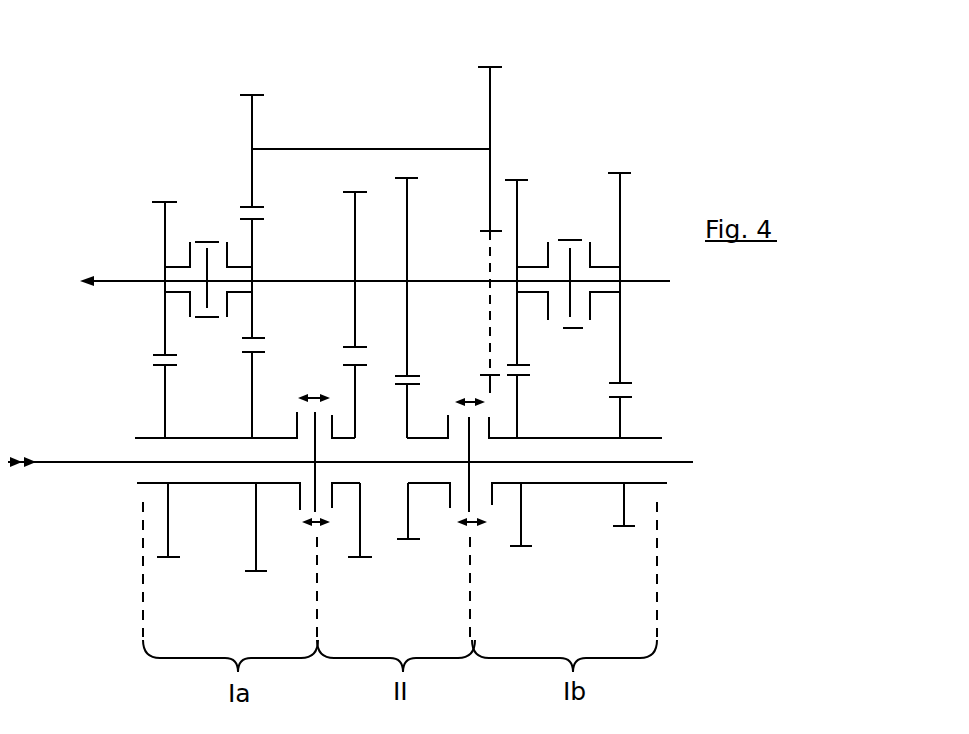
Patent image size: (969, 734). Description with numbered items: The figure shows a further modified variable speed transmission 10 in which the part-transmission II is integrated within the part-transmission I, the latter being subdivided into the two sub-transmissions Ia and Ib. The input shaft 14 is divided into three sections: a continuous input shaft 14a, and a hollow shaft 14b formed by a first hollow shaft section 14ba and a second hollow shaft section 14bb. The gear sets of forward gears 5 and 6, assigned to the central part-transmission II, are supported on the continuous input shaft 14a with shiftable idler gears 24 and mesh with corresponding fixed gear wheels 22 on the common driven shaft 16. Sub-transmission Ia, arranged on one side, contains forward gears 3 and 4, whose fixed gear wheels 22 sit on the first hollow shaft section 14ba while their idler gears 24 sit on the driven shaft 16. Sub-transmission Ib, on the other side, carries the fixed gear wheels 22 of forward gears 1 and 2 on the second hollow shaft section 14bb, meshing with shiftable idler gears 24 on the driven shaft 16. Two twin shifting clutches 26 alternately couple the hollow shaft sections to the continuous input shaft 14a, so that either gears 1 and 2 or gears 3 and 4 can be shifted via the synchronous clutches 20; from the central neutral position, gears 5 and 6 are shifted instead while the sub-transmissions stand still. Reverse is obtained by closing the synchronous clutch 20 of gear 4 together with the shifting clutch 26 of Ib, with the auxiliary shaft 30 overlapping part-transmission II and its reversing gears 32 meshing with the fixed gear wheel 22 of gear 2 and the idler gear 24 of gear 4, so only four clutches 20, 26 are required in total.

The variable speed transmission 10 is at (650, 72).
The input shaft 14 is at (682, 492).
The continuous input shaft 14a is at (112, 463).
The hollow shaft section 14b is at (660, 434).
The first hollow shaft section 14ba is at (158, 438).
The second hollow shaft section 14bb is at (637, 483).
The driven shaft 16 is at (428, 281).
The synchronous clutch 20 is at (209, 333).
The fixed gear wheel 22 is at (405, 235).
The idler gear 24 is at (252, 240).
The shifting clutch 26 is at (328, 538).
The auxiliary shaft 30 is at (347, 149).
The reversing gear 32 is at (253, 127).
The forward gear 1 is at (624, 538).
The forward gear 2 is at (522, 558).
The forward gear 3 is at (168, 570).
The forward gear 4 is at (256, 585).
The forward gear 5 is at (360, 571).
The forward gear 6 is at (408, 553).